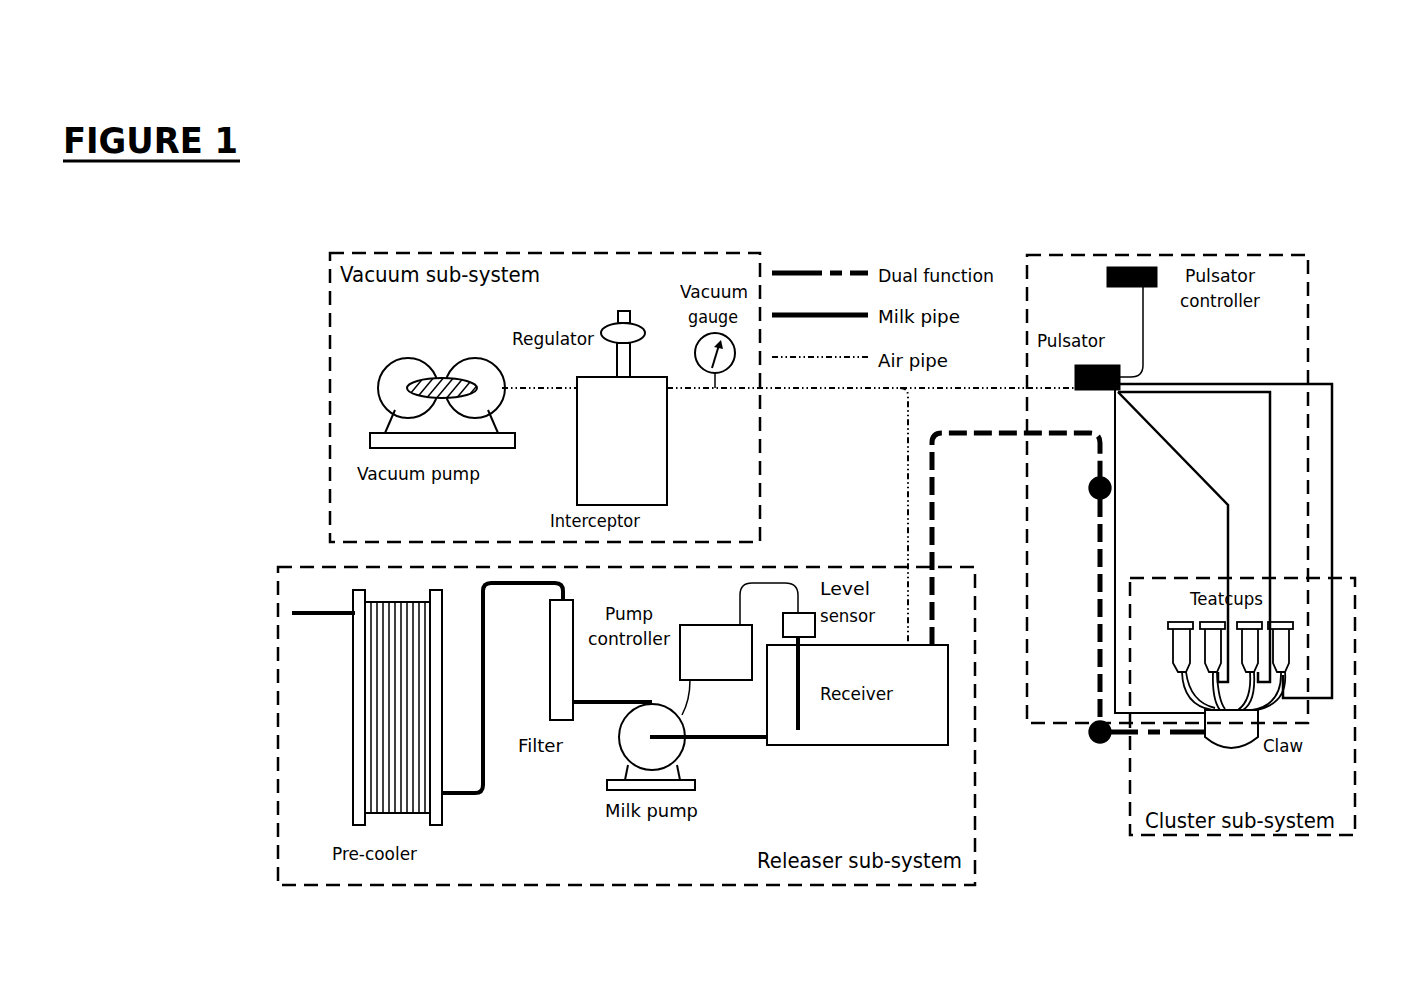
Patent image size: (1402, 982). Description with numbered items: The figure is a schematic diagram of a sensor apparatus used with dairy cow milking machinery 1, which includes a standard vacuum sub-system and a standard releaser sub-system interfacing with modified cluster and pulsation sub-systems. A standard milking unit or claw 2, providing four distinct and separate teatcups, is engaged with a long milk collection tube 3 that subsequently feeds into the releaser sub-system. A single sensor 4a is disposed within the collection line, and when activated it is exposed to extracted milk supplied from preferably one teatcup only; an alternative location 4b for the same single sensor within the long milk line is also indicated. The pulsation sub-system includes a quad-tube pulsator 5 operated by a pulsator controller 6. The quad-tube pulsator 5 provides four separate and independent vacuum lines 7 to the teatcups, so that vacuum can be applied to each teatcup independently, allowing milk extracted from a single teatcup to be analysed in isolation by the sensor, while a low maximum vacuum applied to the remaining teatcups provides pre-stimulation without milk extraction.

The milking machinery 1 is at (1209, 215).
The claw 2 is at (1308, 710).
The long milk collection tube 3 is at (1152, 748).
The sensor 4a is at (1097, 747).
The alternative sensor location 4b is at (1093, 500).
The quad-tube pulsator 5 is at (1067, 330).
The pulsator controller 6 is at (1130, 270).
The vacuum lines 7 is at (1120, 473).